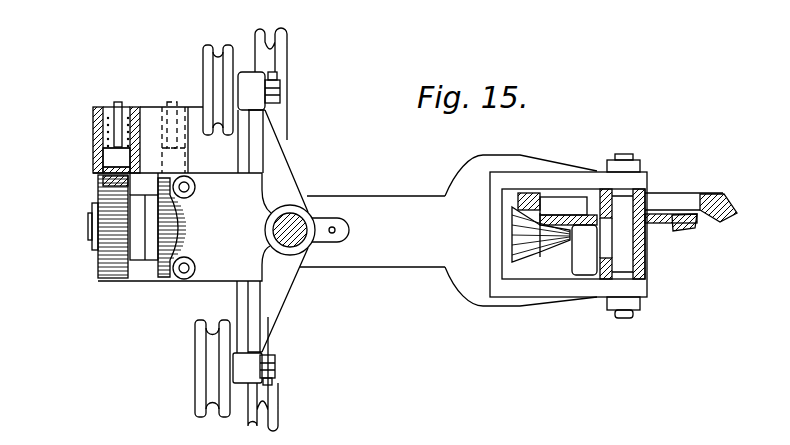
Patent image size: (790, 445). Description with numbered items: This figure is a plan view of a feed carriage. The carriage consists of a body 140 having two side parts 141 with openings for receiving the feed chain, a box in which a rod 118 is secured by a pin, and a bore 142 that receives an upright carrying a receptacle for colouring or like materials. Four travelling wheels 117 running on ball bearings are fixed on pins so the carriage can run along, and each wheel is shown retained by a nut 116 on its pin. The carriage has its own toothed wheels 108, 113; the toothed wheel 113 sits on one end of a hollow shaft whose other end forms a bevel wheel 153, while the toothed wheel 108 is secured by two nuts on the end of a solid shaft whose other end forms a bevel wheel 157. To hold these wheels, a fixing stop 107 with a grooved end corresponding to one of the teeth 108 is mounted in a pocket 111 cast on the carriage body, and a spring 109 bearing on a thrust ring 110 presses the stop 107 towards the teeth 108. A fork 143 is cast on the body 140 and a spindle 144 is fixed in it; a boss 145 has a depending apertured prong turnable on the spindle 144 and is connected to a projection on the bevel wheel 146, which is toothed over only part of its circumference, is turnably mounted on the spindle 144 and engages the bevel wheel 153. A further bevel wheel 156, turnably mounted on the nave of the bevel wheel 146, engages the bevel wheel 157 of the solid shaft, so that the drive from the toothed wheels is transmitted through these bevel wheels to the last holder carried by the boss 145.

The fixing stop 107 is at (105, 153).
The toothed wheel 108 is at (108, 278).
The spring 109 is at (93, 130).
The thrust ring 110 is at (112, 104).
The pocket 111 is at (152, 115).
The toothed wheel 113 is at (157, 278).
The nut 116 is at (281, 90).
The travelling wheel 117 is at (203, 53).
The rod 118 is at (300, 222).
The carriage body 140 is at (367, 253).
The side part 141 is at (183, 280).
The bore 142 is at (343, 222).
The fork 143 is at (527, 302).
The spindle 144 is at (612, 275).
The boss 145 is at (600, 272).
The bevel wheel 146 is at (718, 192).
The bevel wheel 153 is at (525, 247).
The bevel wheel 156 is at (690, 226).
The bevel wheel 157 is at (560, 253).